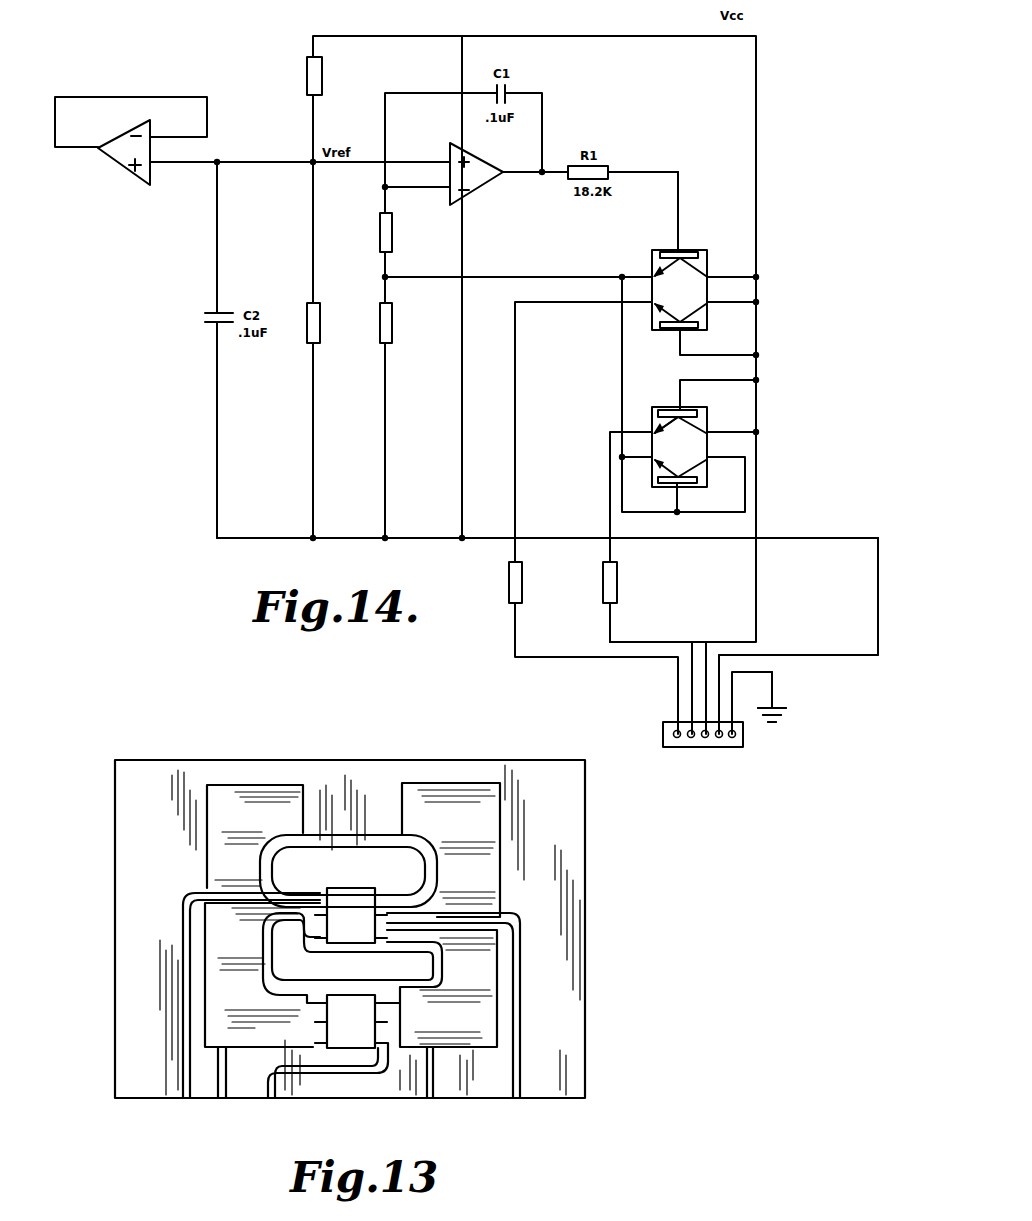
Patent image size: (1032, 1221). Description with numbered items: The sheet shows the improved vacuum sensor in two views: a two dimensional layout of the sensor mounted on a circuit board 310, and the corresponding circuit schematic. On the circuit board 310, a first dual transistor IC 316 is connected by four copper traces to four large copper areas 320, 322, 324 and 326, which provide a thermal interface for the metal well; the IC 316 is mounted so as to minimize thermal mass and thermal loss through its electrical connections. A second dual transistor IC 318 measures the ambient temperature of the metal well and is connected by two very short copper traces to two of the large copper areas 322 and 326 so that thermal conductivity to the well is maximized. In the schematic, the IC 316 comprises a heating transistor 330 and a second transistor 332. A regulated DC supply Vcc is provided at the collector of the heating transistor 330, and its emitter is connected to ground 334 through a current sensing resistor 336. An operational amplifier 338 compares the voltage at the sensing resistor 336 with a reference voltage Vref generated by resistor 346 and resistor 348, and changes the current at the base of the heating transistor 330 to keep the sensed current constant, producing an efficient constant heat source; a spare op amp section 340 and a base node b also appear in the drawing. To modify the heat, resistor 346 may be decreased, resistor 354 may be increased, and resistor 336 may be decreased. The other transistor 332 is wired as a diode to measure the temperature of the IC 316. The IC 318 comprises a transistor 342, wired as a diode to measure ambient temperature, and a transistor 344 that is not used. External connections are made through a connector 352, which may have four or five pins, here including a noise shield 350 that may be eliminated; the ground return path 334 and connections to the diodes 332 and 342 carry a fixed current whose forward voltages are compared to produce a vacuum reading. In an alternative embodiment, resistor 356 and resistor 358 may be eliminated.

In FIG. 13, the circuit board 310 is at (587, 846).
In FIG. 14, the first dual transistor IC 316 is at (715, 240).
In FIG. 13, the first dual transistor IC 316 is at (355, 888).
In FIG. 14, the second dual transistor IC 318 is at (712, 399).
In FIG. 13, the second dual transistor IC 318 is at (370, 1050).
In FIG. 13, the large copper area 320 is at (258, 810).
In FIG. 13, the large copper area 322 is at (220, 1025).
In FIG. 13, the large copper area 324 is at (463, 810).
In FIG. 13, the large copper area 326 is at (472, 1022).
In FIG. 14, the heating transistor 330 is at (685, 250).
In FIG. 14, the temperature measuring transistor 332 is at (668, 330).
In FIG. 14, the ground 334 is at (878, 573).
In FIG. 14, the current sensing resistor 336 is at (380, 340).
In FIG. 14, the operational amplifier 338 is at (476, 180).
In FIG. 14, the spare operational amplifier U3:B 340 is at (128, 137).
In FIG. 14, the ambient temperature measuring transistor 342 is at (677, 418).
In FIG. 14, the unused transistor 344 is at (668, 490).
In FIG. 14, the resistor R4 346 is at (305, 73).
In FIG. 14, the resistor R5 348 is at (305, 305).
In FIG. 14, the noise shield 350 is at (773, 689).
In FIG. 14, the connector 352 is at (699, 781).
In FIG. 14, the resistor R2 354 is at (378, 233).
In FIG. 14, the resistor R6 356 is at (510, 603).
In FIG. 14, the resistor R7 358 is at (603, 597).
In FIG. 14, the base terminal b is at (735, 312).